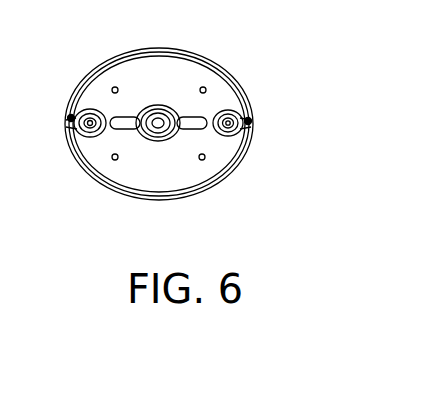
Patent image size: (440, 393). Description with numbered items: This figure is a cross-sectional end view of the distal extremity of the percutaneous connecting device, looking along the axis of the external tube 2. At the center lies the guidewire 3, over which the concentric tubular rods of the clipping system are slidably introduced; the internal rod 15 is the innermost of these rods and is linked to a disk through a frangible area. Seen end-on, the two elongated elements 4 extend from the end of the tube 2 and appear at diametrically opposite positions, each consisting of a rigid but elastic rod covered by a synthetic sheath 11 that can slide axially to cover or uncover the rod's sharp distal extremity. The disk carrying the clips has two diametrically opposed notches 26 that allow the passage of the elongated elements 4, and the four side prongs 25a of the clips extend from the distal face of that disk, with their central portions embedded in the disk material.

The external tube 2 is at (235, 73).
The guidewire 3 is at (159, 108).
The elongated elements 4 is at (68, 116).
The sheath 11 is at (84, 133).
The internal rod 15 is at (237, 157).
The side prongs 25a is at (113, 86).
The notches 26 is at (66, 122).